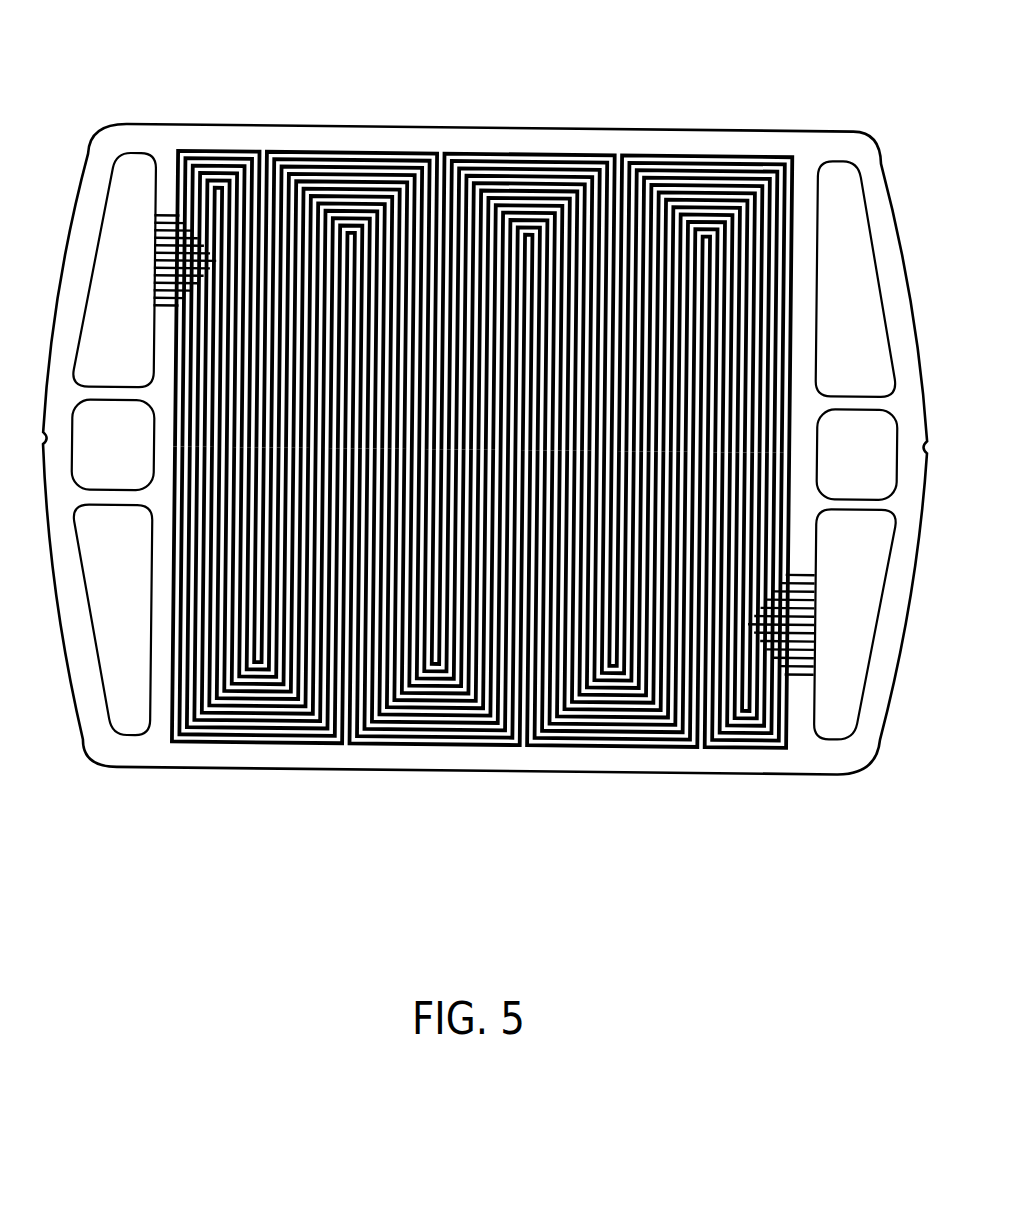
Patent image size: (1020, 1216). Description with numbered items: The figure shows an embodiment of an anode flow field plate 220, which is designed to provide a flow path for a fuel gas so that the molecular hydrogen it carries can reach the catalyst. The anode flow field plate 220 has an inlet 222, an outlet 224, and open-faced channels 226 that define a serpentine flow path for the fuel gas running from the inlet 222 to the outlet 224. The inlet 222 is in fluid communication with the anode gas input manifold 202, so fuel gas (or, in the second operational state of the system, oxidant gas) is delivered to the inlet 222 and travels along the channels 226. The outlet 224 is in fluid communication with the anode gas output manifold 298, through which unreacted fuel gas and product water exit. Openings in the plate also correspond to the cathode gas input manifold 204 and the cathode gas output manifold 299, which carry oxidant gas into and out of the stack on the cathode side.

The anode flow field plate 220 is at (244, 802).
The anode gas input manifold 202 is at (120, 213).
The cathode gas input manifold 204 is at (848, 203).
The inlet 222 is at (150, 290).
The outlet 224 is at (817, 607).
The open-faced channels 226 is at (572, 167).
The anode gas output manifold 298 is at (847, 665).
The cathode gas output manifold 299 is at (121, 700).